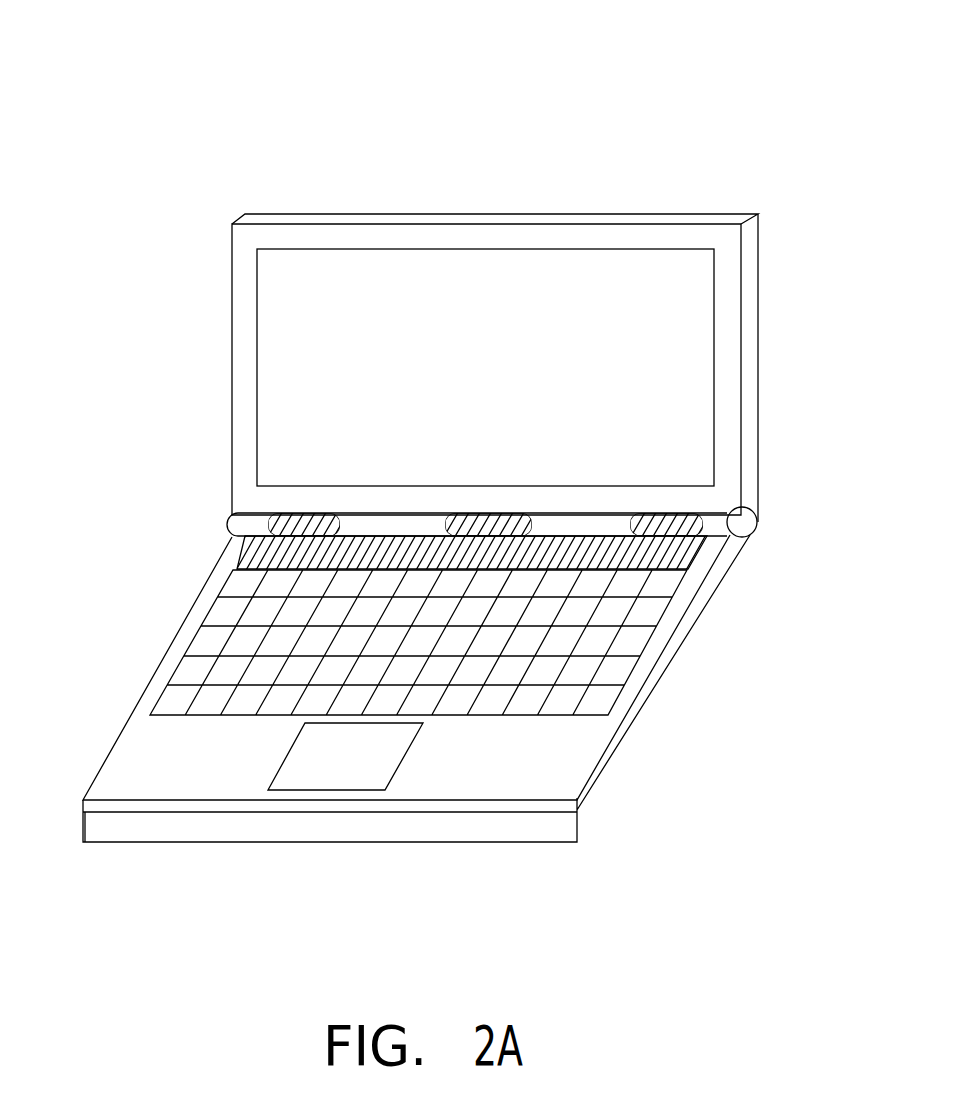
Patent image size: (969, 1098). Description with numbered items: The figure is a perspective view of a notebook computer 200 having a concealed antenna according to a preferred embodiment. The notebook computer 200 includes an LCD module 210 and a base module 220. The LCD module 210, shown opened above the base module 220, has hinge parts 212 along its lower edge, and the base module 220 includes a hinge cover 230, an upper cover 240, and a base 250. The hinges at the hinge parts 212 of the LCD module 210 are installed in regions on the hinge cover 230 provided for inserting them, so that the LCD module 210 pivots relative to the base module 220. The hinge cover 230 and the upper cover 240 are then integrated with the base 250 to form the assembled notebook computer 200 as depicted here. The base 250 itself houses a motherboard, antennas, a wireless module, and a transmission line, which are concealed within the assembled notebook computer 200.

The notebook computer 200 is at (185, 37).
The LCD module 210 is at (769, 213).
The hinge parts 212 is at (440, 478).
The base module 220 is at (406, 719).
The hinge cover 230 is at (312, 517).
The upper cover 240 is at (147, 690).
The base 250 is at (138, 825).